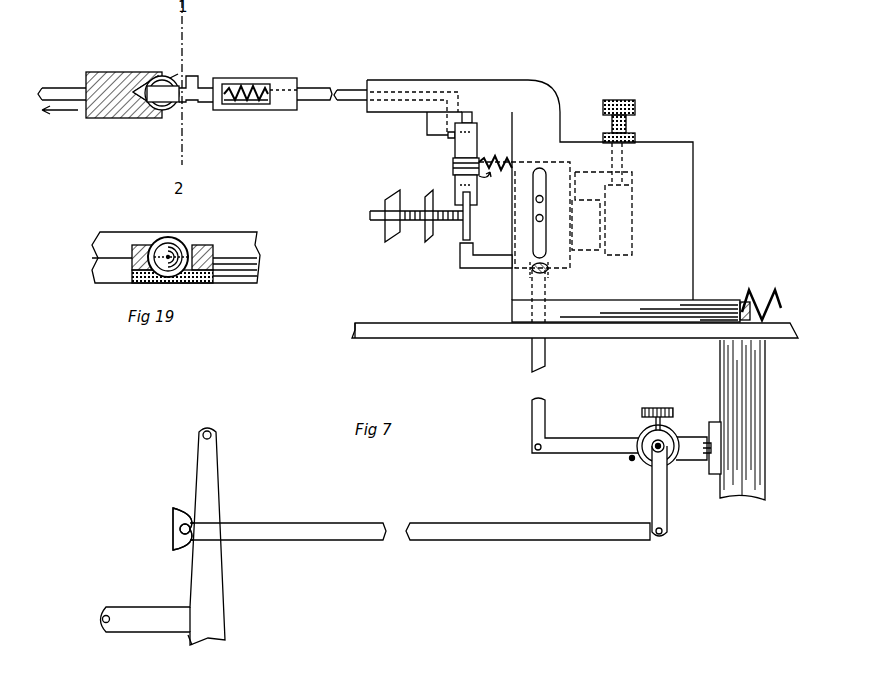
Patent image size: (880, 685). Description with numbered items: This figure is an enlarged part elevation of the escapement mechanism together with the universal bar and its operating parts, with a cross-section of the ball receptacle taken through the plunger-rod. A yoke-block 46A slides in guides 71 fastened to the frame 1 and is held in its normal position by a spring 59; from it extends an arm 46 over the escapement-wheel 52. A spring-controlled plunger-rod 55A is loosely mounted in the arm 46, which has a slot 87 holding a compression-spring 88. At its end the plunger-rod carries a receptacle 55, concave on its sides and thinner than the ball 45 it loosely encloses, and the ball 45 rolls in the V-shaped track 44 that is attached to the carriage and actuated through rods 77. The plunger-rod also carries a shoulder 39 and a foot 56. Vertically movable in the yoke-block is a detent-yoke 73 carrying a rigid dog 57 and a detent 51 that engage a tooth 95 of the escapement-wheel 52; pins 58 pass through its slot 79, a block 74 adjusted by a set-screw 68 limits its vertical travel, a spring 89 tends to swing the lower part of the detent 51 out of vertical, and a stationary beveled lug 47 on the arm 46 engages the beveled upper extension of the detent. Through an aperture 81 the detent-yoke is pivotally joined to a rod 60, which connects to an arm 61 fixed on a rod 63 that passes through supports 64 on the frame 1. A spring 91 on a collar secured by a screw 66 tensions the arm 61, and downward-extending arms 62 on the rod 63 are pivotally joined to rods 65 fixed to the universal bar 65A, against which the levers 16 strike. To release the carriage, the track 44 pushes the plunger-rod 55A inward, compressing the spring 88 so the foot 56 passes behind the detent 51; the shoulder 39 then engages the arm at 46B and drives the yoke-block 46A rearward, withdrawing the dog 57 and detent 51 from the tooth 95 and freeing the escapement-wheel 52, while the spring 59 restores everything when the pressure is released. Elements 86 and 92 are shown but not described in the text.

In FIG. 7, the frame 1 is at (388, 322).
In FIG. 7, the levers 16 is at (216, 486).
In FIG. 7, the shoulder 39 is at (178, 76).
In FIG. 7, the V-shaped track 44 is at (102, 72).
In FIG. 19, the V-shaped track 44 is at (138, 232).
In FIG. 7, the ball 45 is at (180, 86).
In FIG. 19, the ball 45 is at (180, 240).
In FIG. 7, the arm 46 is at (296, 80).
In FIG. 7, the yoke-block 46A is at (693, 180).
In FIG. 7, the engagement point on arm 46B is at (220, 80).
In FIG. 7, the beveled lug 47 is at (474, 112).
In FIG. 7, the detent 51 is at (472, 146).
In FIG. 7, the escapement-wheel 52 is at (414, 222).
In FIG. 7, the receptacle 55 is at (170, 104).
In FIG. 19, the receptacle 55 is at (208, 245).
In FIG. 7, the plunger-rod 55A is at (203, 104).
In FIG. 7, the foot 56 is at (428, 138).
In FIG. 7, the rigid dog 57 is at (472, 270).
In FIG. 7, the pins 58 is at (543, 200).
In FIG. 7, the spring 59 is at (752, 295).
In FIG. 7, the rod 60 is at (546, 356).
In FIG. 7, the arm 61 is at (572, 440).
In FIG. 7, the downward-extending arm 62 is at (651, 490).
In FIG. 7, the rod 63 is at (646, 438).
In FIG. 7, the supports 64 is at (710, 458).
In FIG. 7, the rods 65 is at (448, 522).
In FIG. 7, the universal bar 65A is at (172, 522).
In FIG. 7, the screw 66 is at (662, 408).
In FIG. 7, the set-screw 68 is at (636, 106).
In FIG. 7, the guides 71 is at (622, 300).
In FIG. 7, the detent-yoke 73 is at (554, 160).
In FIG. 7, the block 74 is at (634, 196).
In FIG. 7, the rods 77 is at (62, 86).
In FIG. 7, the slot 79 is at (546, 230).
In FIG. 7, the aperture 81 is at (550, 268).
In FIG. 7, the cone 86 is at (140, 100).
In FIG. 7, the slot 87 is at (256, 88).
In FIG. 7, the compression-spring 88 is at (255, 102).
In FIG. 7, the spring 89 is at (498, 176).
In FIG. 7, the spring 91 is at (680, 430).
In FIG. 7, the pin 92 is at (630, 459).
In FIG. 7, the tooth 95 is at (388, 218).